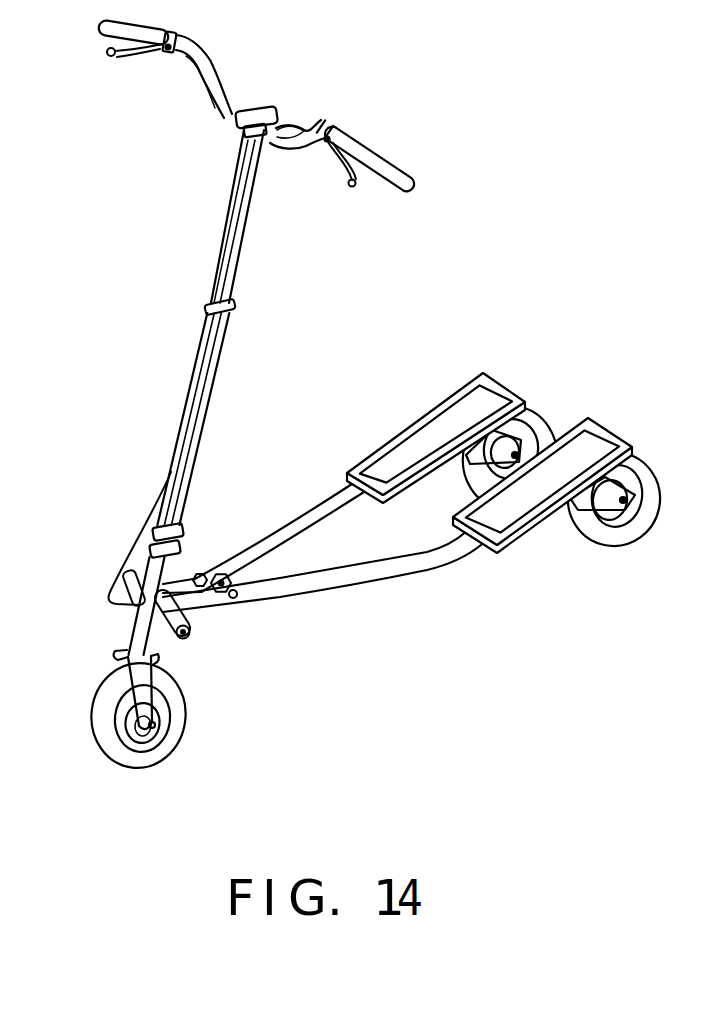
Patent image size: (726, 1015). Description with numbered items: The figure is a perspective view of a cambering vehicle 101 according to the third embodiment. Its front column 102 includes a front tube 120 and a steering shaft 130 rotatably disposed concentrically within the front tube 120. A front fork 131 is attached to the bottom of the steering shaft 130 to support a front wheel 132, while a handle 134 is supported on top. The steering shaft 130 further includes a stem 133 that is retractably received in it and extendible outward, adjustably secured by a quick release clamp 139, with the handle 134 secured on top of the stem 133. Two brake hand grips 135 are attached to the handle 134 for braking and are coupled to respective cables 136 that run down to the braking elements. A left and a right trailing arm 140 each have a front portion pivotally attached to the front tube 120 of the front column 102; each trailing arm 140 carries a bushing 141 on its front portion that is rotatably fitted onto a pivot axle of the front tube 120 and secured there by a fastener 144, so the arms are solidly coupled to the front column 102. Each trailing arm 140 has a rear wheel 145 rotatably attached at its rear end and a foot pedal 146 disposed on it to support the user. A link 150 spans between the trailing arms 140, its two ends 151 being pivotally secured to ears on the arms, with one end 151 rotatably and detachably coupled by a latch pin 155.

The cambering vehicle 101 is at (66, 339).
The front column 102 is at (91, 507).
The front tube 120 is at (134, 628).
The steering shaft 130 is at (190, 395).
The front fork 131 is at (128, 662).
The front wheel 132 is at (168, 752).
The stem 133 is at (240, 252).
The handle 134 is at (323, 122).
The brake hand grips 135 is at (128, 53).
The cables 136 is at (160, 478).
The quick release clamp 139 is at (208, 302).
The trailing arms 140 is at (312, 518).
The bushing 141 is at (205, 628).
The fasteners 144 is at (186, 637).
The rear wheel 145 is at (538, 417).
The foot pedal 146 is at (453, 397).
The link 150 is at (258, 574).
The ends 151 is at (200, 573).
The latch pin 155 is at (222, 574).